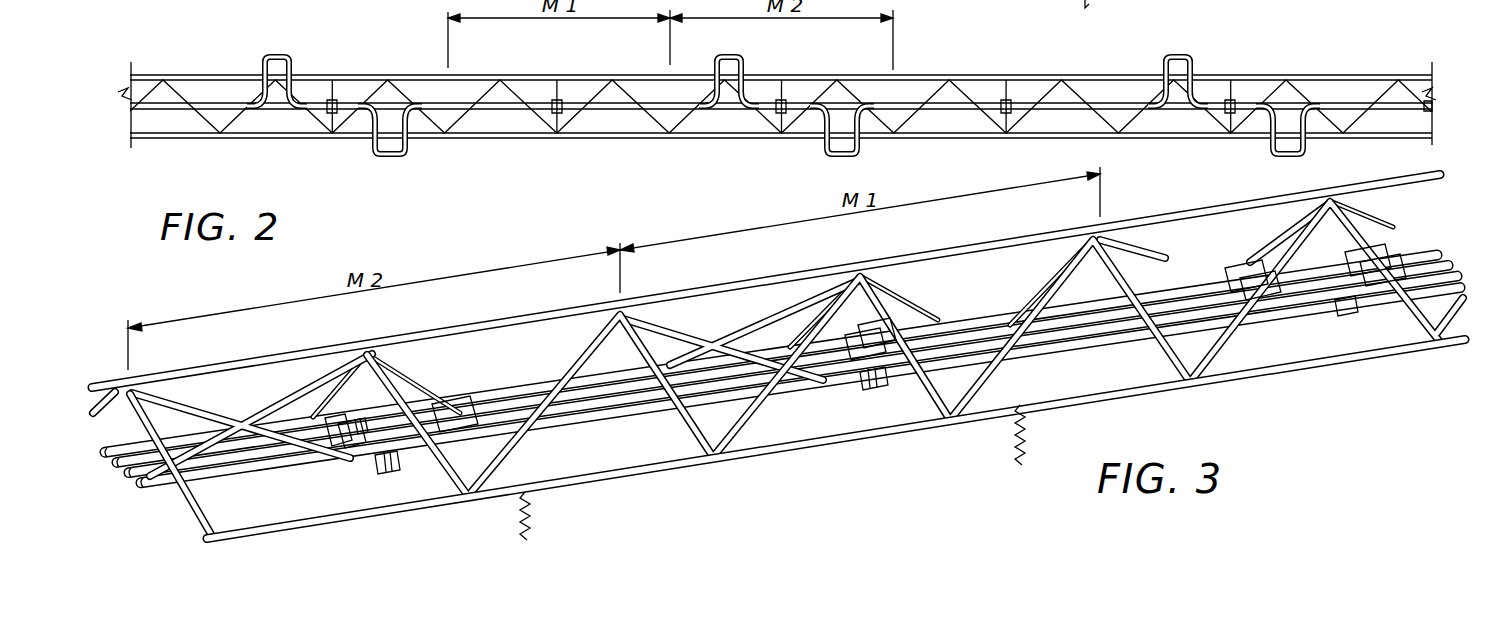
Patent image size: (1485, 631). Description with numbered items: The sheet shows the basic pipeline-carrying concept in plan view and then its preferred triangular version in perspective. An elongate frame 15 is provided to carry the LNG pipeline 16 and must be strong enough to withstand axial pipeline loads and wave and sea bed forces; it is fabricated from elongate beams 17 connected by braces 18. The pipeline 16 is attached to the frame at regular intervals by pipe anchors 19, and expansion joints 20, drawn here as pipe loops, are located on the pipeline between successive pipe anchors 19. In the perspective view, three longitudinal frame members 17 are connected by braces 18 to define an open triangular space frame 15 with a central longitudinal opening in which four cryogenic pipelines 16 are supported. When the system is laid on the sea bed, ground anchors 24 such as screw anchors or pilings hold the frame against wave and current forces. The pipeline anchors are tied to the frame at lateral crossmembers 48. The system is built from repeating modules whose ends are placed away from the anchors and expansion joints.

In FIG. 2, the elongate frame 15 is at (183, 72).
In FIG. 3, the elongate frame 15 is at (673, 472).
In FIG. 2, the LNG pipeline 16 is at (318, 104).
In FIG. 3, the LNG pipeline 16 is at (585, 418).
In FIG. 2, the elongate beam 17 is at (378, 76).
In FIG. 3, the elongate beam 17 is at (107, 466).
In FIG. 2, the brace 18 is at (857, 92).
In FIG. 3, the brace 18 is at (330, 368).
In FIG. 2, the pipe anchor 19 is at (330, 114).
In FIG. 3, the pipe anchor 19 is at (352, 425).
In FIG. 2, the expansion joint 20 is at (285, 52).
In FIG. 3, the expansion joint 20 is at (328, 418).
In FIG. 3, the ground anchor 24 is at (530, 515).
In FIG. 3, the lateral crossmember 48 is at (376, 470).